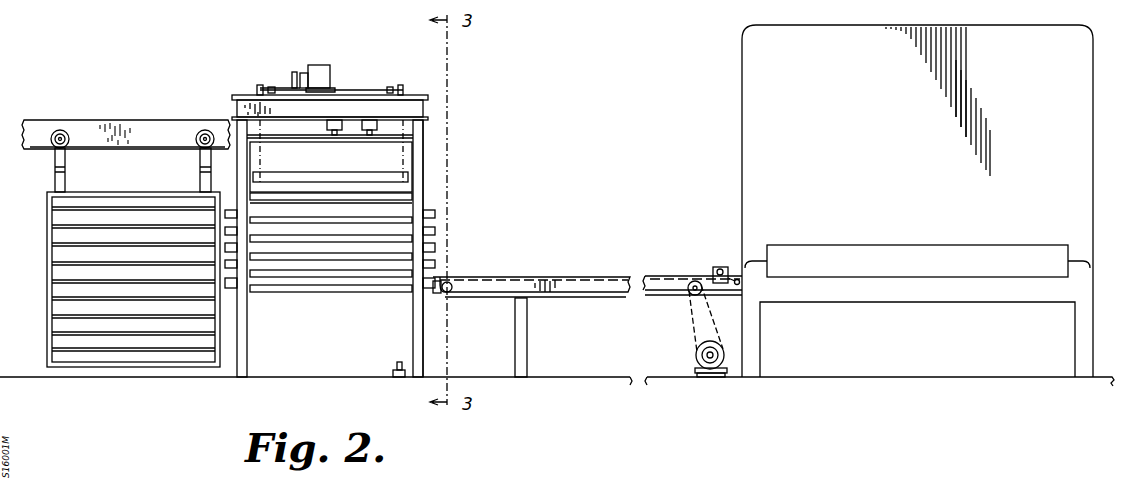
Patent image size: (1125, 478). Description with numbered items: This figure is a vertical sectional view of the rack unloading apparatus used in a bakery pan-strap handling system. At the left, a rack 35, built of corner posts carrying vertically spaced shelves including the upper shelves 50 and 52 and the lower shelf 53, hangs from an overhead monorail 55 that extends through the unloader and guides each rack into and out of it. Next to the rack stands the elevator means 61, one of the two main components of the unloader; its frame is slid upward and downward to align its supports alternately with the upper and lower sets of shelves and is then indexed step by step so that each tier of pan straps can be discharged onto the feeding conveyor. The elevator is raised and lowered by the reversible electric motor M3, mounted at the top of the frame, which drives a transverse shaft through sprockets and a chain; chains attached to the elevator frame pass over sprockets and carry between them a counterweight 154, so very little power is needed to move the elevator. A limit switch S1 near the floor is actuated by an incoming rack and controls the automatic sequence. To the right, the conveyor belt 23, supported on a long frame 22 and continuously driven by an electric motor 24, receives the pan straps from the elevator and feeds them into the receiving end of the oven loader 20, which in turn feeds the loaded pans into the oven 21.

The oven loader 20 is at (998, 250).
The oven 21 is at (767, 138).
The frame 22 is at (587, 293).
The conveyor belt 23 is at (677, 302).
The electric motor 24 is at (697, 353).
The rack 35 is at (38, 289).
The shelf 50 is at (241, 72).
The shelf 52 is at (370, 120).
The shelf 53 is at (335, 120).
The monorail 55 is at (182, 100).
The elevator means 61 is at (439, 177).
The counterweight 154 is at (355, 172).
The reversible electric motor M3 is at (322, 66).
The limit switch S1 is at (398, 378).